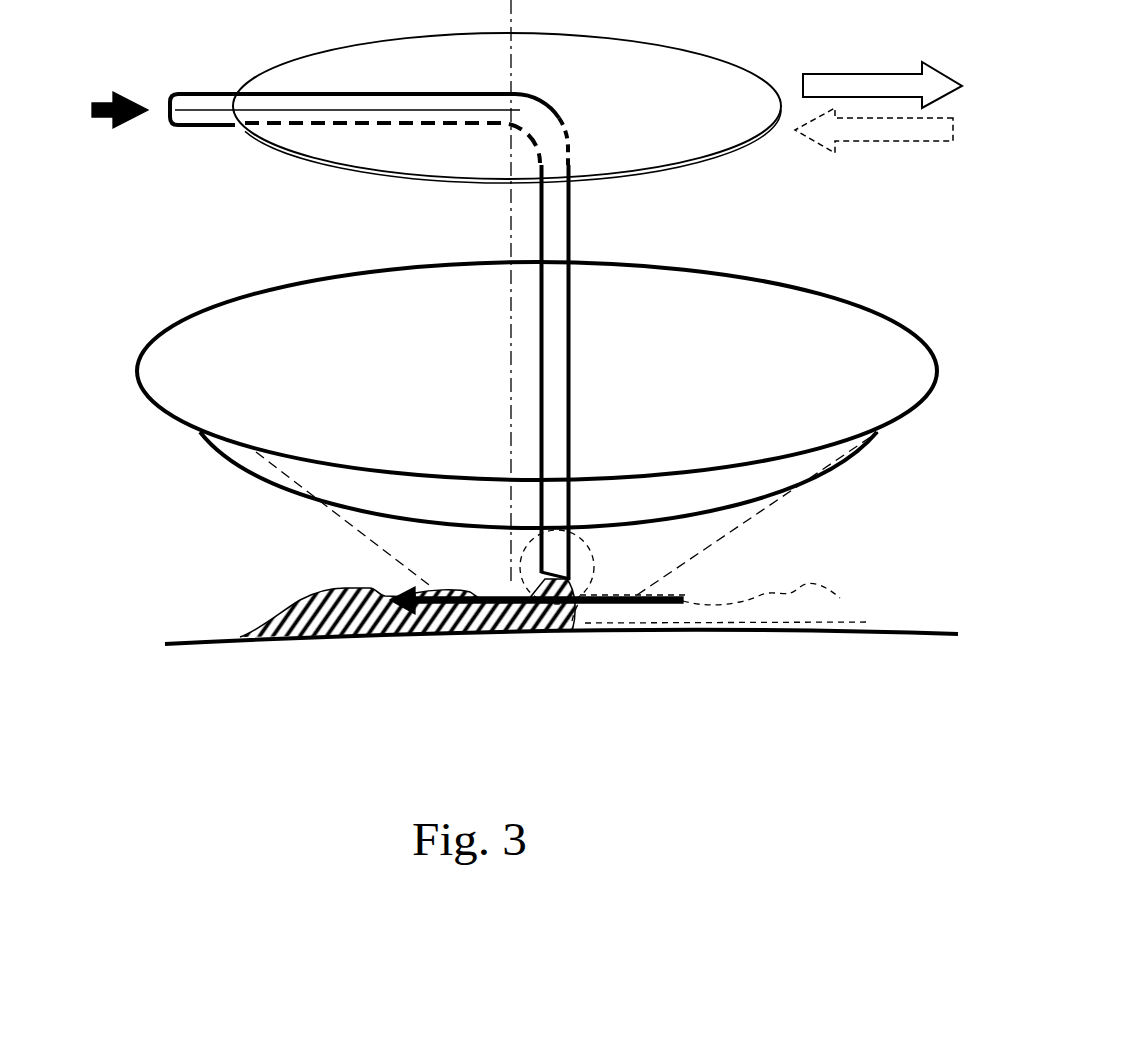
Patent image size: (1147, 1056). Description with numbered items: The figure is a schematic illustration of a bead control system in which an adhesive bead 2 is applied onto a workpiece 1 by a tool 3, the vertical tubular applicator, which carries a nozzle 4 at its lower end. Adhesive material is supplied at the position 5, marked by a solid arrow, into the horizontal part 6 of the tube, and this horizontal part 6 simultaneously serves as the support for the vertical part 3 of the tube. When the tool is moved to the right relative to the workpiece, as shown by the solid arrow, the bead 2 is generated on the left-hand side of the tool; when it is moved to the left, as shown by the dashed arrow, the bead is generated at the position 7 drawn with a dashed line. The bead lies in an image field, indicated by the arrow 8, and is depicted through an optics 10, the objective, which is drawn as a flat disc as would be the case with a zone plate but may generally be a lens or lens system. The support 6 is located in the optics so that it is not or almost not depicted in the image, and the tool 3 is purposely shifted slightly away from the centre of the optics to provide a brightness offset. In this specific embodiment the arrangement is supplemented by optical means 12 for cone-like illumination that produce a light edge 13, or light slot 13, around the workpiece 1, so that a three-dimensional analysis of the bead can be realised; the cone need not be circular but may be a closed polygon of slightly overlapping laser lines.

The workpiece 1 is at (217, 650).
The bead 2 is at (333, 622).
The tool 3 is at (585, 348).
The nozzle 4 is at (612, 563).
The material supply position 5 is at (158, 130).
The horizontal part of the tube 6 is at (206, 80).
The bead position 7 is at (757, 610).
The image field 8 is at (601, 615).
The optics 10 is at (695, 175).
The optical means 12 is at (718, 500).
The light edge 13 is at (352, 549).